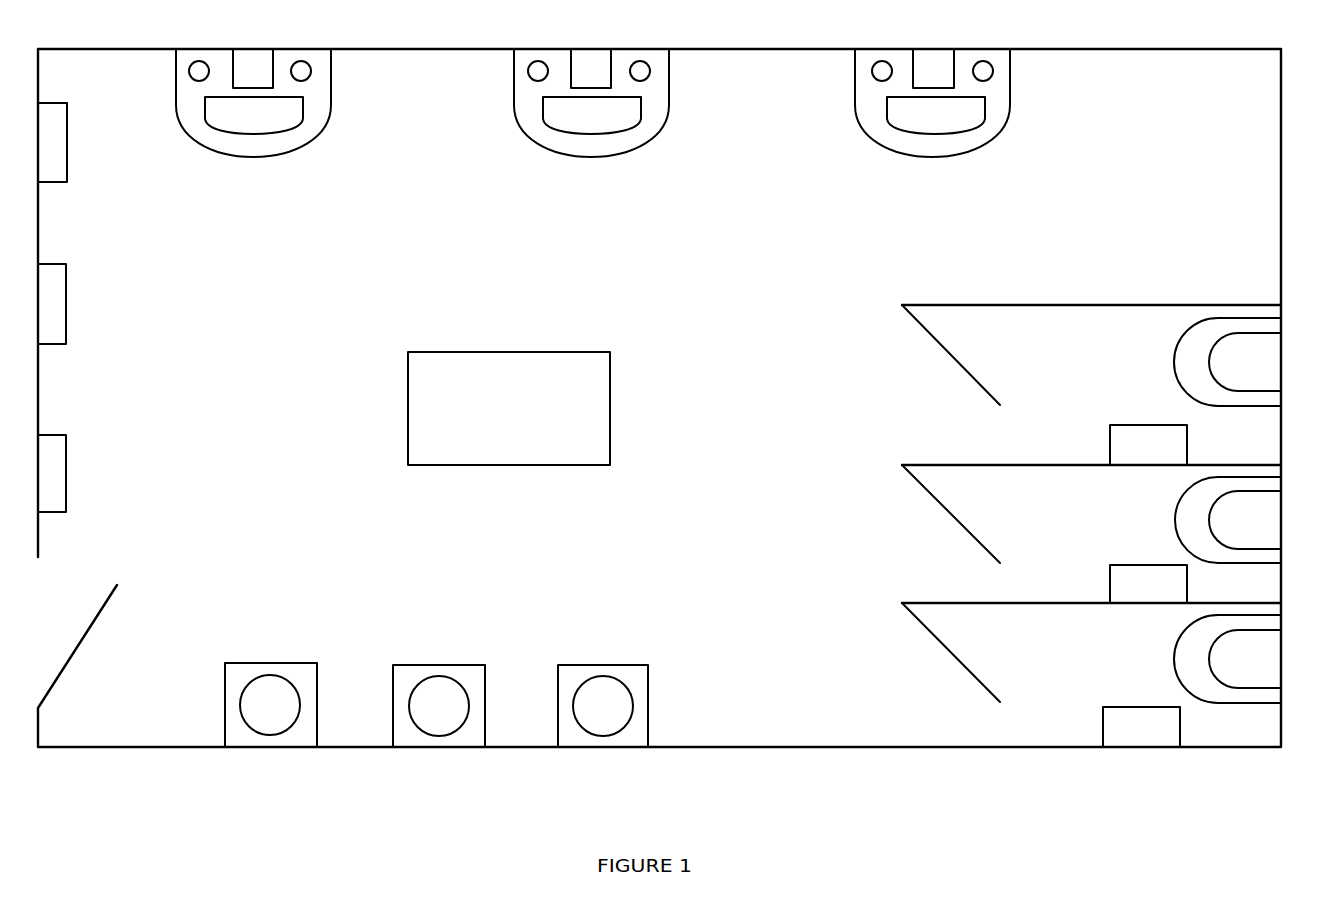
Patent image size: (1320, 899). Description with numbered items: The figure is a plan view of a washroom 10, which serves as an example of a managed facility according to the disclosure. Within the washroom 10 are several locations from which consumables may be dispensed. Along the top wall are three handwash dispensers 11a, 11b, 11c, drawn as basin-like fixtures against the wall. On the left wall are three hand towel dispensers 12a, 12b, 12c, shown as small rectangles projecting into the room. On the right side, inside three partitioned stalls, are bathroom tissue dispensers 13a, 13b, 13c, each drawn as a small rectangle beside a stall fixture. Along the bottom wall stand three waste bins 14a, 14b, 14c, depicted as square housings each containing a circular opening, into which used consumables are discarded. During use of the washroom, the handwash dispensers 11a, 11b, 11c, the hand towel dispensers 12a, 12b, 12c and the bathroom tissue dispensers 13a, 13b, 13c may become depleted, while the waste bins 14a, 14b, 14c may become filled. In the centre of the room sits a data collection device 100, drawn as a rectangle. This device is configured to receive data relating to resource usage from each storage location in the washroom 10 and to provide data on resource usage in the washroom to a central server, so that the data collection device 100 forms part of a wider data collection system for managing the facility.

The washroom 10 is at (659, 380).
The handwash dispenser 11a is at (248, 82).
The handwash dispenser 11b is at (587, 82).
The handwash dispenser 11c is at (928, 82).
The hand towel dispenser 12a is at (55, 136).
The hand towel dispenser 12b is at (60, 292).
The hand towel dispenser 12c is at (55, 478).
The bathroom tissue dispenser 13a is at (1122, 442).
The bathroom tissue dispenser 13b is at (1118, 582).
The bathroom tissue dispenser 13c is at (1118, 722).
The waste bin 14a is at (248, 677).
The waste bin 14b is at (410, 678).
The waste bin 14c is at (572, 678).
The data collection device 100 is at (553, 368).